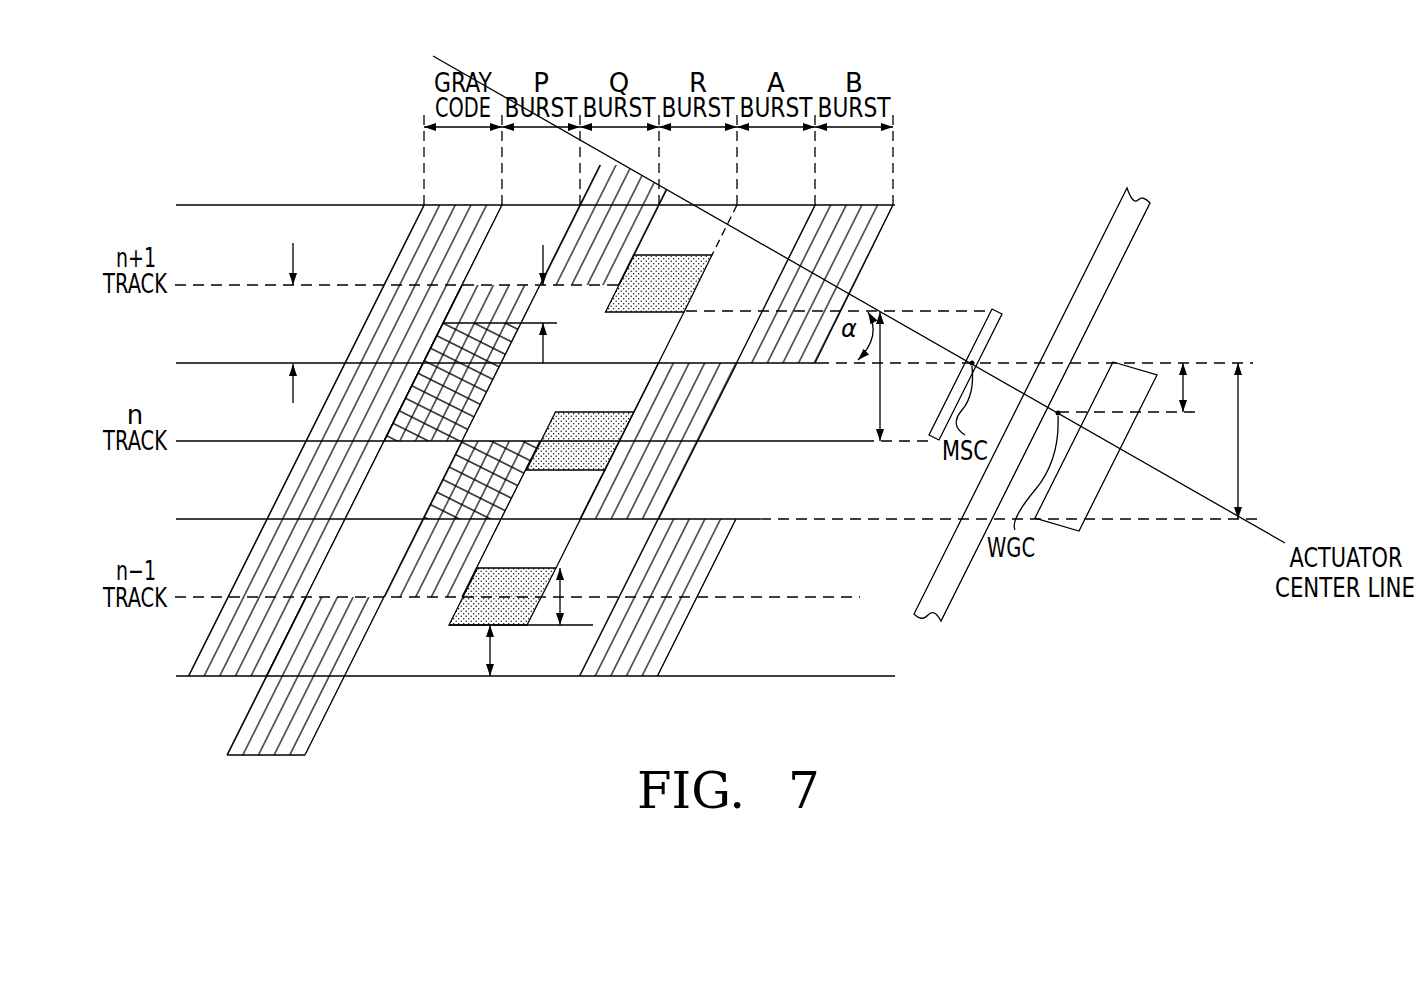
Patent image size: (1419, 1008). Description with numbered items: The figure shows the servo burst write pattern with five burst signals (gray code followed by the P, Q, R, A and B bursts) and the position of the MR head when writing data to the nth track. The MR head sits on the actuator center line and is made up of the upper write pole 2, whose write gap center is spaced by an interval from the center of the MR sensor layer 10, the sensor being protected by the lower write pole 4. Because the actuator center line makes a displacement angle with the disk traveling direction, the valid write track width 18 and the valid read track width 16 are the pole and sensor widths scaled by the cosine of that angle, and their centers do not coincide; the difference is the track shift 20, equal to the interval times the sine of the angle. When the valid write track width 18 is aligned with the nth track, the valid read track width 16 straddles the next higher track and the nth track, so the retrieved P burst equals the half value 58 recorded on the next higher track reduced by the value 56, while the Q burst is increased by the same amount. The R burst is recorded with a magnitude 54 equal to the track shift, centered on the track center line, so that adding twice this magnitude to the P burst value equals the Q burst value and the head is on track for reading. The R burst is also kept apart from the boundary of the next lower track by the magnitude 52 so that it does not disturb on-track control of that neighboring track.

The upper write pole 2 is at (1070, 531).
The lower write pole 4 is at (1122, 233).
The MR sensor layer 10 is at (995, 311).
The valid read track width 16 is at (878, 378).
The valid write track width 18 is at (1254, 441).
The track shift 20 is at (1200, 387).
The R burst offset from n-1 track boundary 52 is at (507, 650).
The R burst magnitude 54 is at (576, 596).
The P burst reduction value 56 is at (560, 342).
The half-value burst magnitude 58 is at (276, 264).